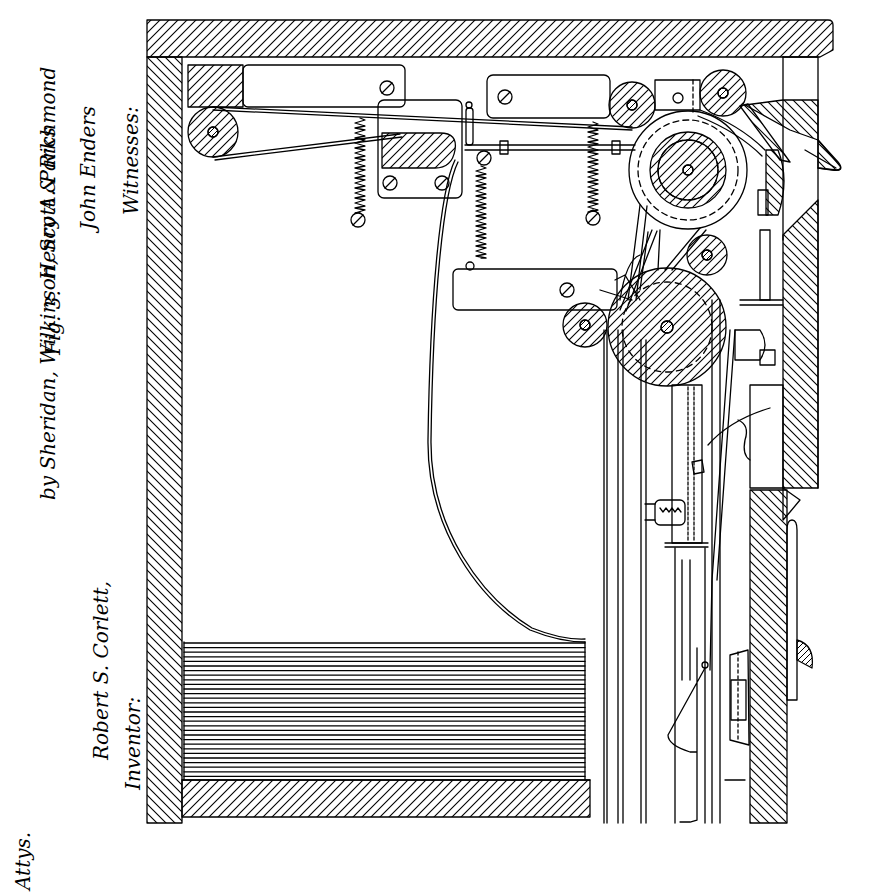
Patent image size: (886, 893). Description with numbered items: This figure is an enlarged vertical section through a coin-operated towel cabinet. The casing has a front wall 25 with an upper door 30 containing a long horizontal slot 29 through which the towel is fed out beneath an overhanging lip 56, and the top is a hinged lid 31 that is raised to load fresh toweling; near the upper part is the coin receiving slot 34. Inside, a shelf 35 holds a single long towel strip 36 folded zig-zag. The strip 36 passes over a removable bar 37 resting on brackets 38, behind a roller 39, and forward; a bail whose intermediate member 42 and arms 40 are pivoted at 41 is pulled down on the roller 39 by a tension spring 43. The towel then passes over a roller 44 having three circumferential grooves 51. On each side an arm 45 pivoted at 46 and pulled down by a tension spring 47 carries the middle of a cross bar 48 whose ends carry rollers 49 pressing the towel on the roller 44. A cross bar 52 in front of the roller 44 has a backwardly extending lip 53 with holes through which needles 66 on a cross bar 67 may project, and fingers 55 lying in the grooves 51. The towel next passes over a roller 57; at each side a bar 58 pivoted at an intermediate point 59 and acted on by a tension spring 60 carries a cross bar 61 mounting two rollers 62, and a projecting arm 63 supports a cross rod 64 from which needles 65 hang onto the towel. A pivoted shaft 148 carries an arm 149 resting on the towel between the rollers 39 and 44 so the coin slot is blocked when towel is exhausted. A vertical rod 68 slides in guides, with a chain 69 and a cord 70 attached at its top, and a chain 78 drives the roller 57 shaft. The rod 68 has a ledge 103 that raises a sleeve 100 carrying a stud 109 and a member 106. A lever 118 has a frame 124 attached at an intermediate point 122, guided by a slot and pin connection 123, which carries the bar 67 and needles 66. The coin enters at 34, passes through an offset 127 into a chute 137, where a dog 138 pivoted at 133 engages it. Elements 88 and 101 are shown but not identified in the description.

The front wall 25 is at (775, 790).
The long horizontal slot 29 is at (806, 190).
The upper door 30 is at (800, 311).
The hinged lid 31 is at (832, 32).
The coin receiving slot 34 is at (796, 568).
The shelf 35 is at (255, 800).
The towel strip 36 is at (280, 150).
The removable bar 37 is at (415, 170).
The brackets 38 is at (425, 200).
The roller 39 is at (214, 158).
The bail arms 40 is at (324, 86).
The bail pivot 41 is at (380, 90).
The intermediate member of bail 42 is at (243, 86).
The tension spring 43 is at (352, 185).
The roller 44 is at (640, 170).
The arm 45 is at (548, 96).
The arm pivot 46 is at (517, 102).
The tension spring 47 is at (585, 182).
The cross bar 48 is at (668, 100).
The rollers 49 is at (625, 95).
The circumferential grooves 51 is at (636, 185).
The cross bar 52 is at (826, 178).
The backwardly extending lip 53 is at (755, 204).
The backwardly projecting fingers 55 is at (762, 130).
The overhanging lip 56 is at (830, 165).
The roller 57 is at (612, 355).
The bar 58 is at (535, 289).
The intermediate pivot point 59 is at (560, 296).
The tension spring 60 is at (487, 216).
The cross bar 61 is at (600, 290).
The rollers 62 is at (575, 345).
The projecting arm 63 is at (680, 249).
The cross rod 64 is at (631, 262).
The needles 65 is at (614, 280).
The needles 66 is at (770, 146).
The cross bar 67 is at (781, 190).
The vertical rod 68 is at (720, 590).
The chain 69 is at (641, 445).
The cord 70 is at (618, 462).
The chain 78 is at (635, 220).
The rod 88 is at (686, 618).
The sleeve 100 is at (690, 415).
The catch 101 is at (692, 468).
The ledge 103 is at (675, 548).
The member 106 is at (682, 524).
The stud 109 is at (772, 408).
The lever 118 is at (762, 346).
The intermediate point 122 is at (775, 360).
The slot and pin connection 123 is at (760, 303).
The frame 124 is at (772, 272).
The offset 127 is at (812, 666).
The dog pivot 133 is at (704, 668).
The chute 137 is at (752, 700).
The dog 138 is at (685, 735).
The pivoted shaft 148 is at (545, 152).
The arm 149 is at (466, 112).